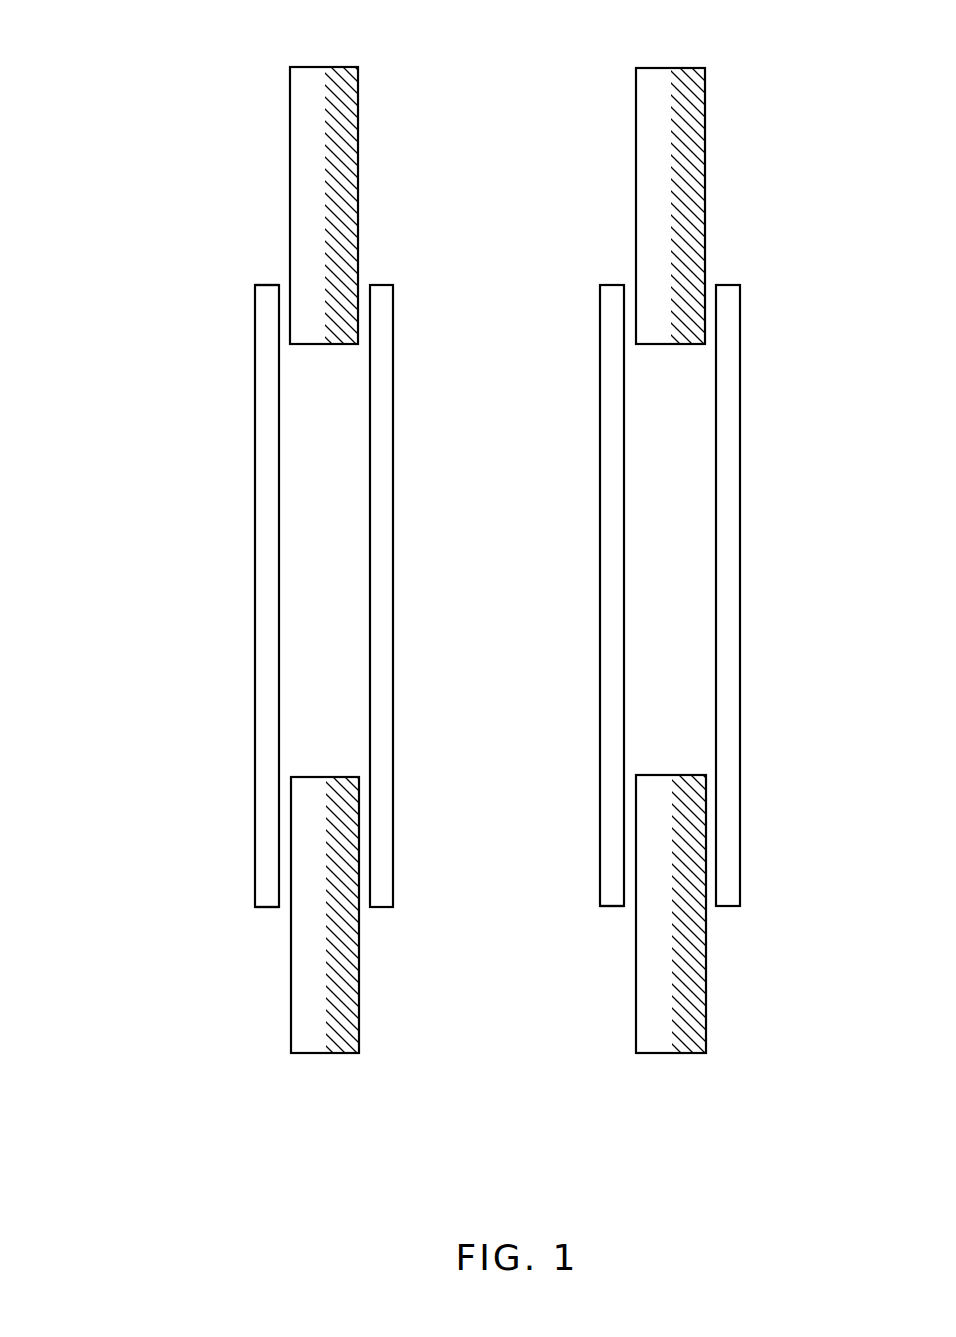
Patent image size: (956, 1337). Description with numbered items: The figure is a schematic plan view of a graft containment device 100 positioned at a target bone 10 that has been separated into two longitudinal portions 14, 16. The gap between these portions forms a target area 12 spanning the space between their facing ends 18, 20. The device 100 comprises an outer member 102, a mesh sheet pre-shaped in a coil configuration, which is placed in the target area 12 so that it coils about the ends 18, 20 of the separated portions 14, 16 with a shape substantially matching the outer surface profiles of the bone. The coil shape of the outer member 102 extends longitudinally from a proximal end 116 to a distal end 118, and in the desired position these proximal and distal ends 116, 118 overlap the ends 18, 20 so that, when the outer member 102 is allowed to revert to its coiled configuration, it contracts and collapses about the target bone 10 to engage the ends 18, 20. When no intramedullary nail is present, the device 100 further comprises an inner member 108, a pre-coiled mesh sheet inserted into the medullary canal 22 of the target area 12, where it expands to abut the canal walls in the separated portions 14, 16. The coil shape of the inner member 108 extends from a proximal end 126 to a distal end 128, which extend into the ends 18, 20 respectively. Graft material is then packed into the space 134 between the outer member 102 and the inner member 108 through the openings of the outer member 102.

The target bone 10 is at (218, 136).
The graft containment device 100 is at (145, 349).
The outer member 102 is at (252, 530).
The inner member 108 is at (394, 615).
The proximal end 116 is at (252, 325).
The distal end 118 is at (254, 876).
The space 134 is at (308, 676).
The medullary canal 22 is at (488, 168).
The proximal end 126 is at (598, 313).
The distal end 128 is at (600, 891).
The target area 12 is at (745, 528).
The longitudinal portion 14 is at (707, 192).
The longitudinal portion 16 is at (706, 978).
The end 18 is at (692, 317).
The end 20 is at (685, 798).